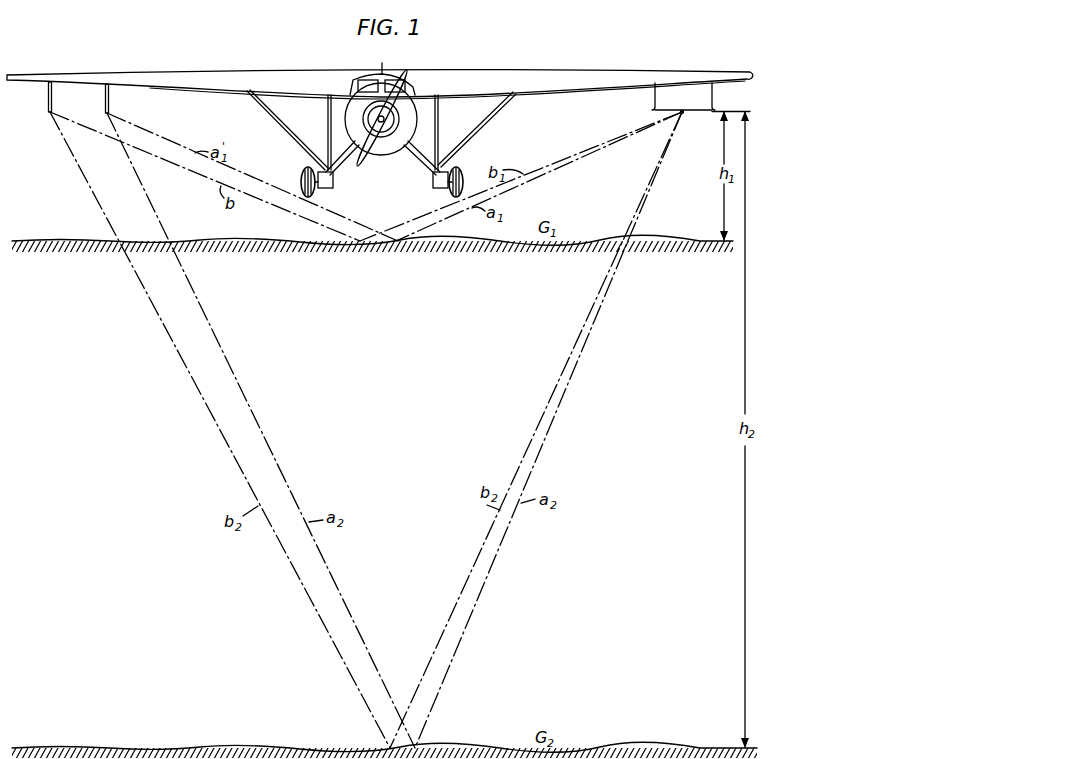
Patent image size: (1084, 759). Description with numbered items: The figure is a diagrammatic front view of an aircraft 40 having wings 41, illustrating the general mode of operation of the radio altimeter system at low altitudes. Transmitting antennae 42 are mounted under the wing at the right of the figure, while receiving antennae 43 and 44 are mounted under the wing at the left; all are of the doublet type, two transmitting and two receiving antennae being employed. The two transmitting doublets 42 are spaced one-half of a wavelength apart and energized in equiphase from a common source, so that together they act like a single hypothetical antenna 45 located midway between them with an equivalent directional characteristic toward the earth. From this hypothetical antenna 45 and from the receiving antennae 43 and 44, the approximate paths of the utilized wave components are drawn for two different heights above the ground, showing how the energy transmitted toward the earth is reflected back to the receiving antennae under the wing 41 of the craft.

The aircraft 40 is at (388, 80).
The wings 41 is at (220, 75).
The transmitting antennae 42 is at (705, 103).
The receiving antenna 43 is at (112, 113).
The receiving antenna 44 is at (47, 113).
The hypothetical antenna 45 is at (683, 114).